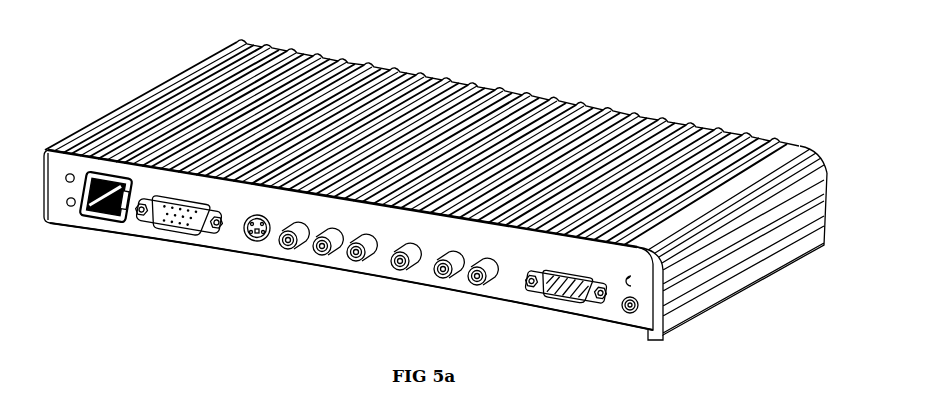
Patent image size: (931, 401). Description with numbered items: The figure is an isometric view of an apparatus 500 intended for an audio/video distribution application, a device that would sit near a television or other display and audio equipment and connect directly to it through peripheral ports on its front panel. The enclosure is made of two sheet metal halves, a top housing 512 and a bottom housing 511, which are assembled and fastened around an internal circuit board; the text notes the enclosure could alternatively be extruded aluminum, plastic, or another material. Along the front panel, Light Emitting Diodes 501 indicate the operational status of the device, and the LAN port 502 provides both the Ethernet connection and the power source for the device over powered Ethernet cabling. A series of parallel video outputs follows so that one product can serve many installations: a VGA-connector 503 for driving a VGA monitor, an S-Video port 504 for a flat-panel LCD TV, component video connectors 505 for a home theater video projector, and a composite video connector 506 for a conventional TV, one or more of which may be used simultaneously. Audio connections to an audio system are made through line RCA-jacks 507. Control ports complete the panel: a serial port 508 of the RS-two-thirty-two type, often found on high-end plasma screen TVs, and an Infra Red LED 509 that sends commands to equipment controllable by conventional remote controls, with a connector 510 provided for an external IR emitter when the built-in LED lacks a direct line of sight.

The apparatus 500 is at (418, 192).
The Light Emitting Diodes 501 is at (68, 207).
The LAN port 502 is at (110, 210).
The VGA-connector 503 is at (165, 229).
The S-Video port 504 is at (250, 238).
The component video connectors 505 is at (352, 260).
The composite video connector 506 is at (393, 264).
The line RCA-jacks 507 is at (437, 278).
The RS-232 serial port 508 is at (537, 297).
The Infra Red (IR) LED 509 is at (624, 283).
The power jack 510 is at (626, 310).
The bottom housing 511 is at (663, 331).
The top housing 512 is at (710, 292).